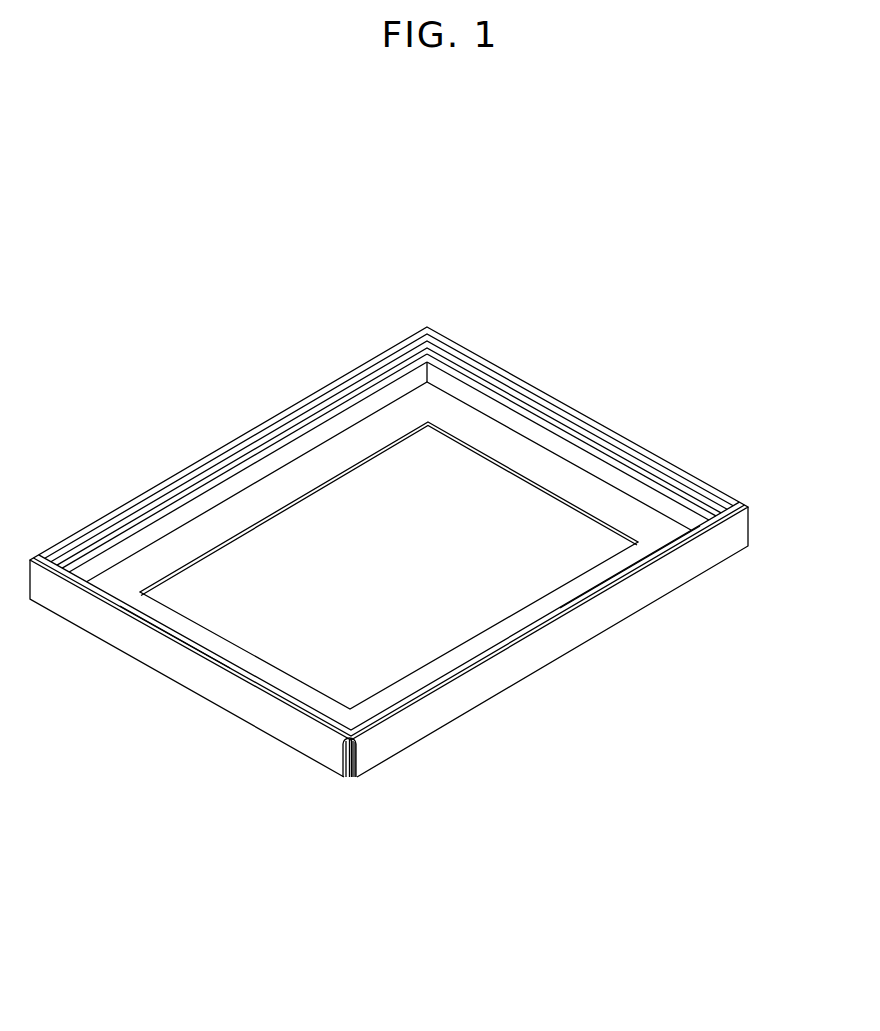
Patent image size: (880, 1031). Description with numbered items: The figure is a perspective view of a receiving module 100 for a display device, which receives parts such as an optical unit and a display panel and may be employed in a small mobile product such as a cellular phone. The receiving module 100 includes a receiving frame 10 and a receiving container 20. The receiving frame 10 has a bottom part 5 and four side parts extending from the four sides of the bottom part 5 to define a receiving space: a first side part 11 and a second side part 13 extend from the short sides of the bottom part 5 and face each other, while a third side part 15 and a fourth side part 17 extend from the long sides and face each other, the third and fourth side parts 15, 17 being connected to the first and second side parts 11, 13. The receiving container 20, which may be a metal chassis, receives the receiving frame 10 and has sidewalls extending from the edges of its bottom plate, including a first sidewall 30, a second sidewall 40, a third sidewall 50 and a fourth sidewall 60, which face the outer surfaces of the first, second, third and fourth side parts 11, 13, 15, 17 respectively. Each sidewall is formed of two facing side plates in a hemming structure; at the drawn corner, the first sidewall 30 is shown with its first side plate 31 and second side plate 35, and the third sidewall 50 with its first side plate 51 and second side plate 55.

The receiving module 100 is at (443, 223).
The receiving frame 10 is at (470, 429).
The bottom part 5 is at (498, 637).
The receiving container 20 is at (756, 514).
The first side part 11 is at (210, 655).
The second side part 13 is at (662, 470).
The third side part 15 is at (627, 566).
The fourth side part 17 is at (200, 475).
The second sidewall 40 is at (603, 421).
The fourth sidewall 60 is at (258, 425).
The first sidewall 30 is at (277, 836).
The first side plate 31 is at (348, 777).
The second side plate 35 is at (345, 777).
The third sidewall 50 is at (355, 836).
The first side plate 51 is at (352, 777).
The second side plate 55 is at (355, 777).